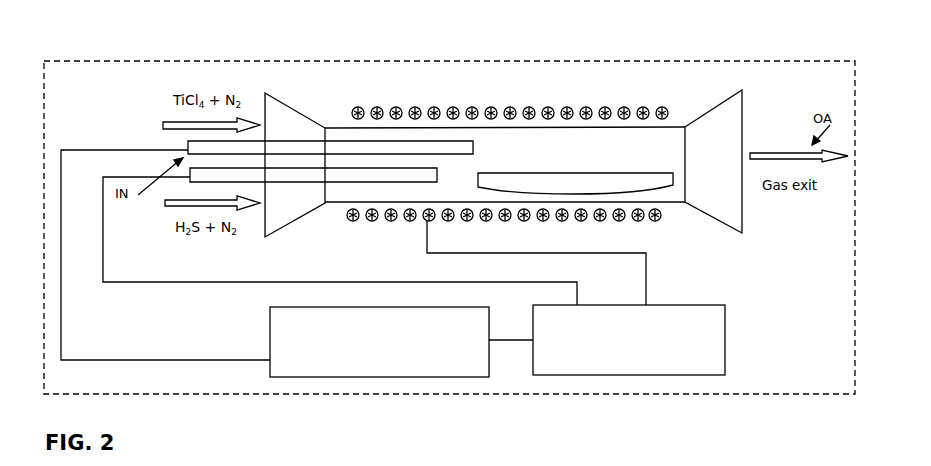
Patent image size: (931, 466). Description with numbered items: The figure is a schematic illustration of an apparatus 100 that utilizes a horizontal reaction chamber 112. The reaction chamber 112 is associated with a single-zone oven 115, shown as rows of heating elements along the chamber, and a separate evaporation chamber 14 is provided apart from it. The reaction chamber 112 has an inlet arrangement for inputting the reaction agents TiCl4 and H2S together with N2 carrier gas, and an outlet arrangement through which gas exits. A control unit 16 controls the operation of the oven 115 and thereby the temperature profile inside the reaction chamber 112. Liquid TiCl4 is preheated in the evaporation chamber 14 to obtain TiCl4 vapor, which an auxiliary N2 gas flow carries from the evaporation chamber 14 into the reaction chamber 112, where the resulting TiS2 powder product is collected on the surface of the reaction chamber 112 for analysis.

The apparatus 100 is at (786, 50).
The horizontal reaction chamber 112 is at (338, 132).
The single-zone oven 115 is at (533, 108).
The evaporation chamber 14 is at (270, 332).
The control unit 16 is at (726, 328).